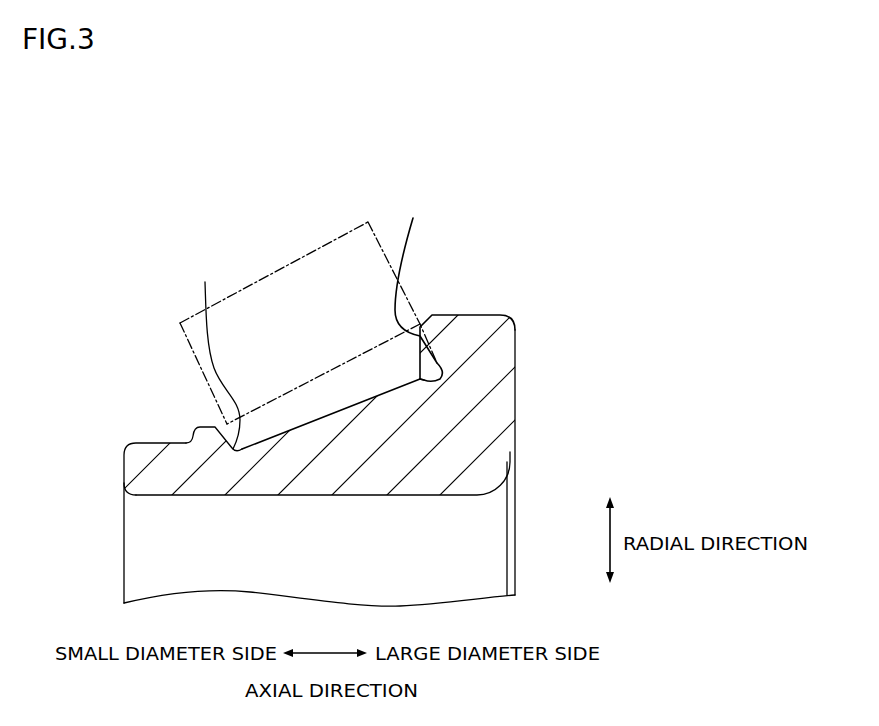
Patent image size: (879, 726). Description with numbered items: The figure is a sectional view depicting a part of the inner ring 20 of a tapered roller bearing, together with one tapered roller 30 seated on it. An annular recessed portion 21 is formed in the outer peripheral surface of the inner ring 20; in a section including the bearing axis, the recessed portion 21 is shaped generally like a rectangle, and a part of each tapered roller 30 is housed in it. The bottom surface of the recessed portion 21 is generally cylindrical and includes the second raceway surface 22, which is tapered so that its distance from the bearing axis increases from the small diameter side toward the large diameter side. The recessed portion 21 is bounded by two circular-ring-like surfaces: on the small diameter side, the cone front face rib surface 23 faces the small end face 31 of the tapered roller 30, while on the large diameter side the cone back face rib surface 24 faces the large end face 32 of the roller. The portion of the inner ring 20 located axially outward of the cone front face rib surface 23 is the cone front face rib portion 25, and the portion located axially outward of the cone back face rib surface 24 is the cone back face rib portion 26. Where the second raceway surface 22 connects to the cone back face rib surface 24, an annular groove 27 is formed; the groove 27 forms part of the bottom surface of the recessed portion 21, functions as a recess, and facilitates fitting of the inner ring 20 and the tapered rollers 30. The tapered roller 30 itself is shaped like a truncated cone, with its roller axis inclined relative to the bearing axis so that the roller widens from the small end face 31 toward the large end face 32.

The inner ring 20 is at (574, 246).
The recessed portion 21 is at (331, 411).
The second raceway surface 22 is at (314, 418).
The cone front face rib surface 23 is at (218, 355).
The cone back face rib surface 24 is at (418, 289).
The cone front face rib portion 25 is at (201, 428).
The cone back face rib portion 26 is at (468, 330).
The groove 27 is at (437, 389).
The tapered roller 30 is at (288, 265).
The small end face 31 is at (188, 353).
The large end face 32 is at (410, 297).